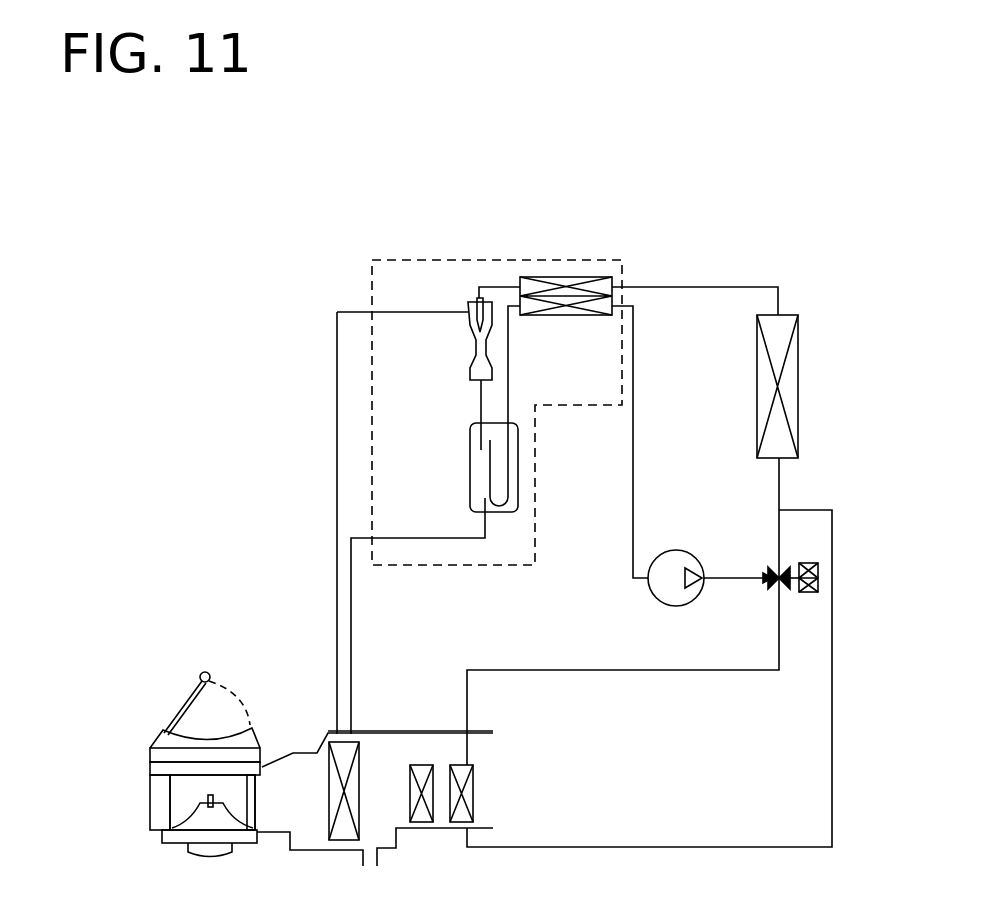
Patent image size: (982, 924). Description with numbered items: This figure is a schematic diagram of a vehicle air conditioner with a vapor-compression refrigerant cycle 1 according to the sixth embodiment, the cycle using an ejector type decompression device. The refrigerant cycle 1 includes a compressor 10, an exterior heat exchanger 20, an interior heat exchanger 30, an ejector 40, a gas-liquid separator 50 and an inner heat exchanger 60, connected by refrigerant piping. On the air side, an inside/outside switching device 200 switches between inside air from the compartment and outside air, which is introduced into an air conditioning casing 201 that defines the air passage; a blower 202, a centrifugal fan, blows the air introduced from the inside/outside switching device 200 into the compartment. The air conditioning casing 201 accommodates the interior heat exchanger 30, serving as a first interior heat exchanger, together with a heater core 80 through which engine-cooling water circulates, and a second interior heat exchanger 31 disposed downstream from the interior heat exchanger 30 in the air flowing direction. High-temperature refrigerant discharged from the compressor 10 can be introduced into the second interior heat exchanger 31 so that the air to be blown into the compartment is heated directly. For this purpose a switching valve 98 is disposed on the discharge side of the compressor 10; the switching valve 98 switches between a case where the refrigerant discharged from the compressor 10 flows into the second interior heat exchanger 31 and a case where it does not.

The vapor-compression refrigerant cycle 1 is at (780, 227).
The compressor 10 is at (688, 556).
The exterior heat exchanger 20 is at (757, 392).
The interior heat exchanger 30 is at (329, 803).
The second interior heat exchanger 31 is at (473, 795).
The ejector 40 is at (475, 337).
The gas-liquid separator 50 is at (518, 463).
The inner heat exchanger 60 is at (558, 277).
The heater core 80 is at (410, 800).
The switching valve 98 is at (767, 583).
The inside/outside switching device 200 is at (197, 768).
The air conditioning casing 201 is at (403, 730).
The blower 202 is at (163, 800).